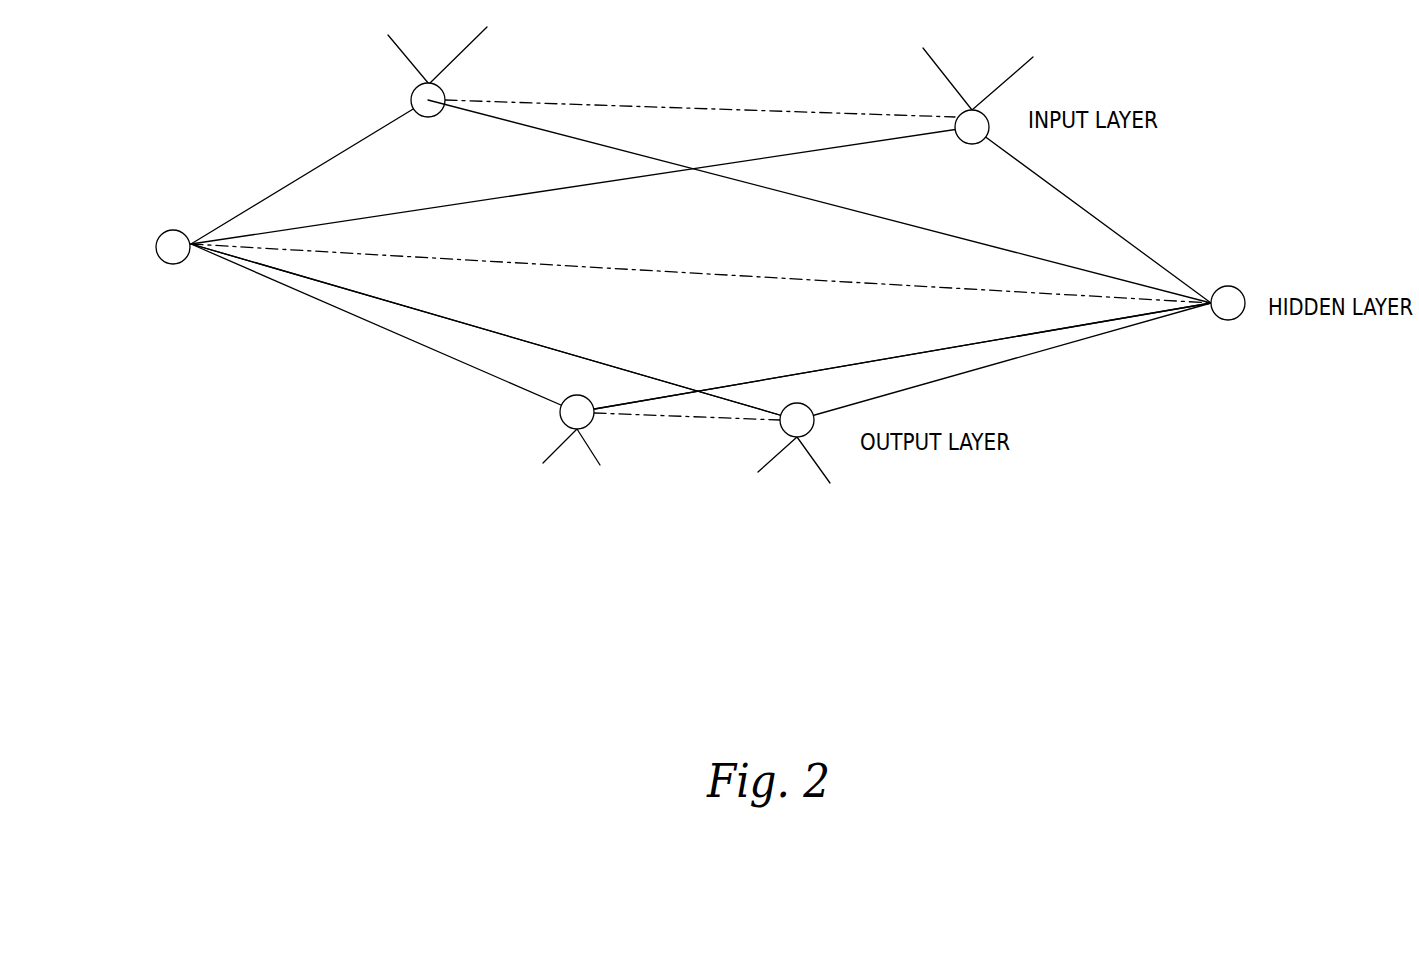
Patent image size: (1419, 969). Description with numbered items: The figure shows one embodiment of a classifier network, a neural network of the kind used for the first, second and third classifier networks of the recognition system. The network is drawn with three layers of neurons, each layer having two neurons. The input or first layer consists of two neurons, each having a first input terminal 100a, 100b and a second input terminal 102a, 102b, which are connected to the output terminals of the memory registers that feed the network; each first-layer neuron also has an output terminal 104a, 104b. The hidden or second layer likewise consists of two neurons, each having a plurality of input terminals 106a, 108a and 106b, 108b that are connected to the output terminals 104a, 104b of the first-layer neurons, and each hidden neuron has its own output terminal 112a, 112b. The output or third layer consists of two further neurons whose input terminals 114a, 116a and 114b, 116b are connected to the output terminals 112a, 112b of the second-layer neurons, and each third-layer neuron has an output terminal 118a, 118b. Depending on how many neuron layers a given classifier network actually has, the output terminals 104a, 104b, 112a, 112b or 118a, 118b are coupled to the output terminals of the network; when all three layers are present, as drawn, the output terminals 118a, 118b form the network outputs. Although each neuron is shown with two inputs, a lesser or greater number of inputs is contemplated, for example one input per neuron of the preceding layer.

The first input terminal 100a is at (407, 62).
The second input terminal 102a is at (460, 58).
The output terminal 104a is at (467, 110).
The input terminal 106a is at (235, 215).
The input terminal 108a is at (260, 230).
The output terminal 112a is at (307, 275).
The input terminal 114a is at (523, 390).
The input terminal 116a is at (640, 397).
The output terminal 118a is at (562, 445).
The first input terminal 100b is at (942, 75).
The second input terminal 102b is at (1003, 85).
The output terminal 104b is at (993, 143).
The input terminal 106b is at (1085, 267).
The input terminal 108b is at (1147, 245).
The output terminal 112b is at (1093, 325).
The input terminal 114b is at (778, 413).
The input terminal 116b is at (836, 408).
The output terminal 118b is at (812, 470).